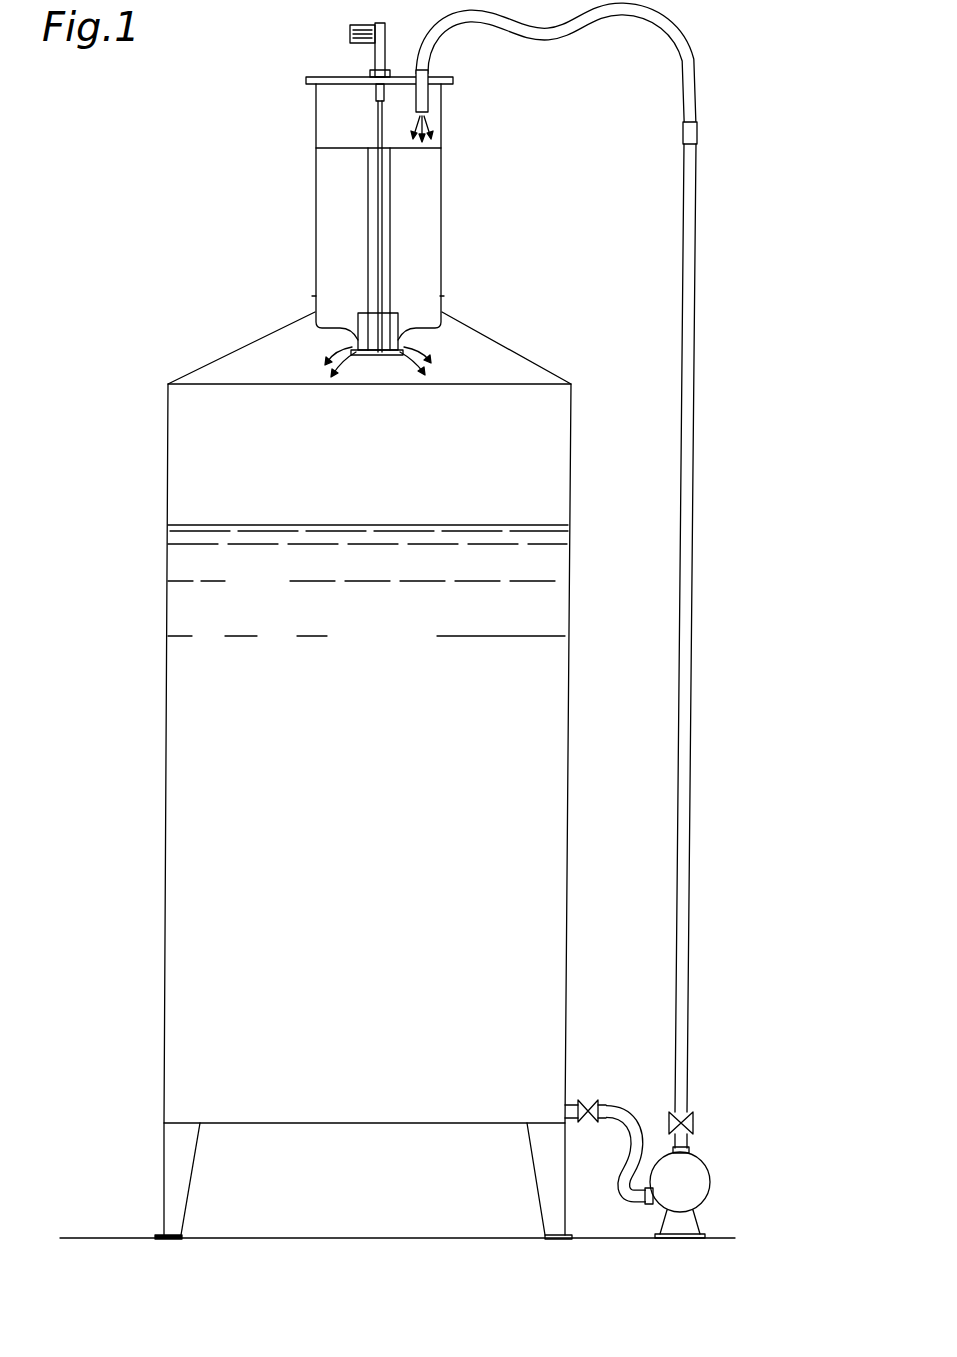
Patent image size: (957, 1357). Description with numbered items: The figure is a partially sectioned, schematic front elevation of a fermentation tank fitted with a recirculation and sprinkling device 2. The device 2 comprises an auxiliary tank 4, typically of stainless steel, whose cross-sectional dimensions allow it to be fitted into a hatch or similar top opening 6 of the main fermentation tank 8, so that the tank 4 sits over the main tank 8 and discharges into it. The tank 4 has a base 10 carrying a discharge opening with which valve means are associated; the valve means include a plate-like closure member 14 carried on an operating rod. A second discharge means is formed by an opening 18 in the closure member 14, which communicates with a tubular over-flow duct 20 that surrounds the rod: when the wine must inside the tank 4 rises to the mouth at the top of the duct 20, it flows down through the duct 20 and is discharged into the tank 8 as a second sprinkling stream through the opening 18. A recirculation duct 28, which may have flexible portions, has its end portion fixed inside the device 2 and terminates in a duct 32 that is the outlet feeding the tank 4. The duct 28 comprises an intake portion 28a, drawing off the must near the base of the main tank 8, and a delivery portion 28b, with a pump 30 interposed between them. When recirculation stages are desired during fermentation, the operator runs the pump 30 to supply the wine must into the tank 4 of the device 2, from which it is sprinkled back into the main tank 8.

The recirculation and sprinkling device 2 is at (272, 200).
The tank 4 is at (443, 191).
The top opening 6 is at (313, 290).
The main fermentation tank 8 is at (166, 597).
The base 10 is at (330, 335).
The closure member 14 is at (397, 355).
The opening 18 is at (375, 357).
The tubular over-flow duct 20 is at (392, 282).
The recirculation duct 28 is at (705, 275).
The intake portion 28a is at (625, 1175).
The delivery portion 28b is at (687, 485).
The pump 30 is at (700, 1176).
The duct 32 is at (428, 102).